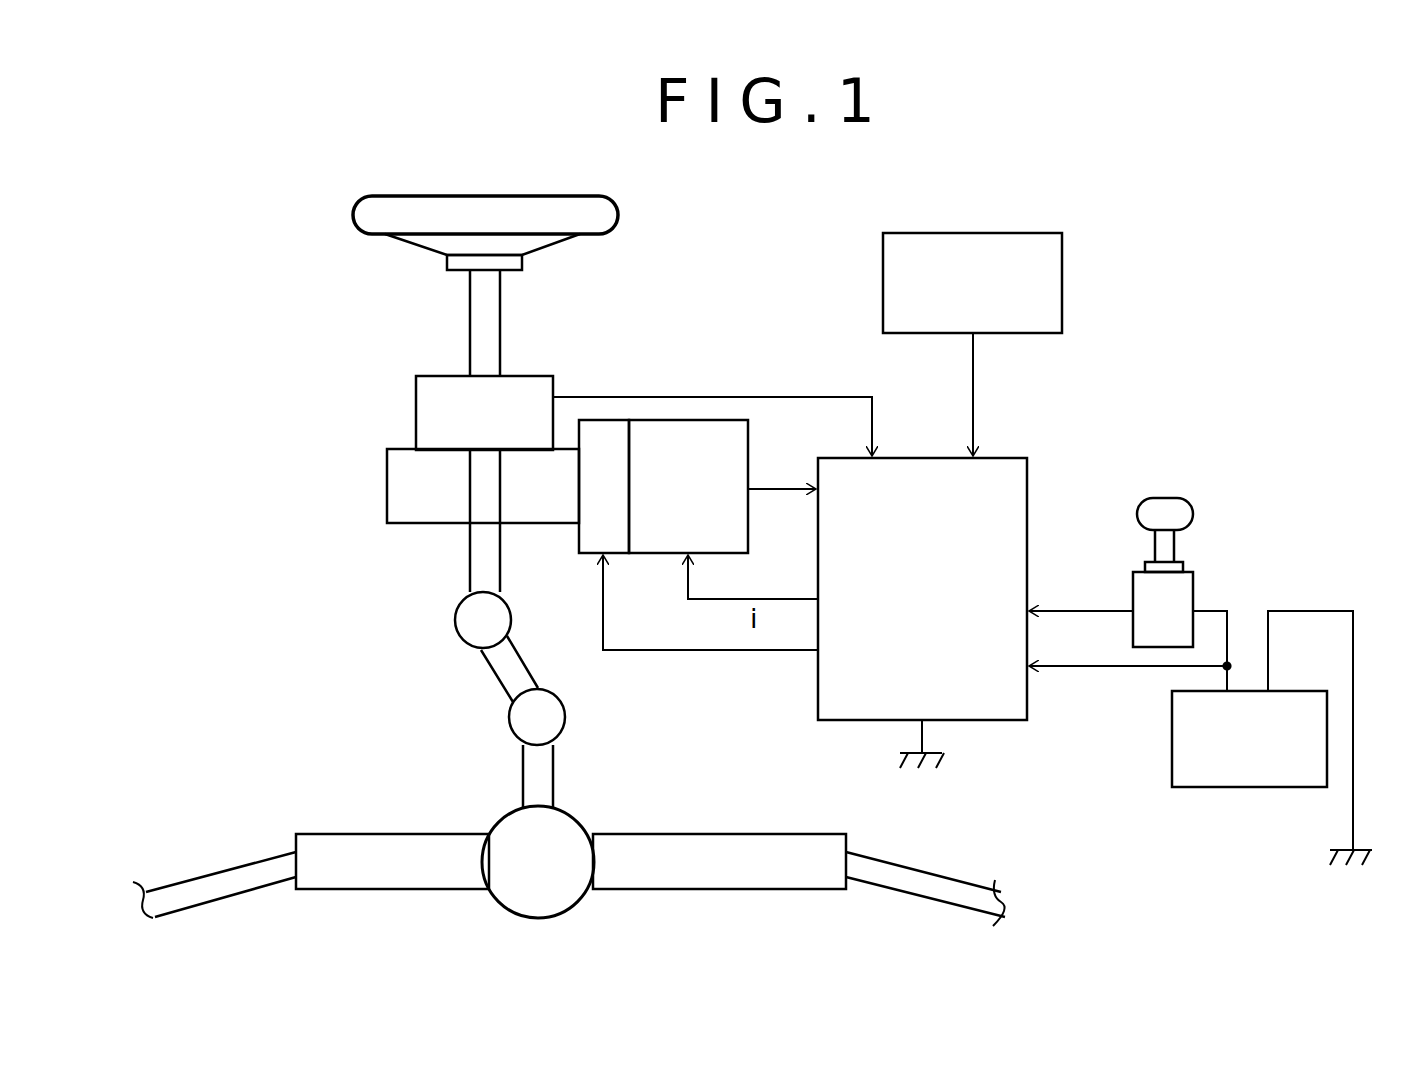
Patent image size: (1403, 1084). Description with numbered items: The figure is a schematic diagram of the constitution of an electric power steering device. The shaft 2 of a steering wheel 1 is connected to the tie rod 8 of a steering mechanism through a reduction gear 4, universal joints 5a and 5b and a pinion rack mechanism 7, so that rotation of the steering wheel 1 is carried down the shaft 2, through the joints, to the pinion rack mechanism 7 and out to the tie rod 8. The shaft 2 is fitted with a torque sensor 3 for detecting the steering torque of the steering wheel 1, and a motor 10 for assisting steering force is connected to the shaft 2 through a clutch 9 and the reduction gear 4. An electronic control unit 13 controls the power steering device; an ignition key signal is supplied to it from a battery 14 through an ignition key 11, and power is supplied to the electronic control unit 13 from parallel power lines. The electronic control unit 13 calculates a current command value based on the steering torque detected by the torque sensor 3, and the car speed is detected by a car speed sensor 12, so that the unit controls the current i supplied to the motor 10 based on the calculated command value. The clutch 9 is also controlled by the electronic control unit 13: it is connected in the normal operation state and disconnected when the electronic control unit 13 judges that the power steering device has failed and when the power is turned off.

The steering wheel 1 is at (618, 213).
The shaft 2 is at (470, 330).
The torque sensor 3 is at (416, 403).
The reduction gear 4 is at (387, 490).
The universal joint 5a is at (454, 620).
The universal joint 5b is at (509, 720).
The pinion rack mechanism 7 is at (584, 814).
The tie rod 8 is at (933, 873).
The clutch 9 is at (604, 420).
The motor 10 is at (689, 420).
The ignition key 11 is at (1193, 515).
The car speed sensor 12 is at (1004, 233).
The electronic control unit 13 is at (1003, 458).
The battery 14 is at (1220, 790).